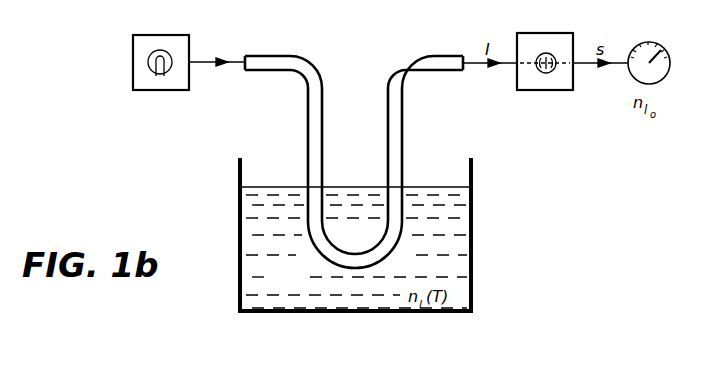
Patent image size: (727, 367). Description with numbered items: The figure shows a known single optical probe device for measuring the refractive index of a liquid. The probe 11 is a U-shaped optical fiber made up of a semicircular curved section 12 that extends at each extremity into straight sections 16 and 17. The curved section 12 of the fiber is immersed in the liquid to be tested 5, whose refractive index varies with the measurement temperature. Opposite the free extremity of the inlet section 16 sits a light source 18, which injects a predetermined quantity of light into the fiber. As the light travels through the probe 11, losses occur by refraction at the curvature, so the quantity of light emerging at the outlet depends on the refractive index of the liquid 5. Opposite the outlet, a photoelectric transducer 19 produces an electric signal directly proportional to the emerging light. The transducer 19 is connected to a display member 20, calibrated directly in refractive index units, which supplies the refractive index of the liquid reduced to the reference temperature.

The liquid to be tested 5 is at (430, 189).
The single probe 11 is at (477, 217).
The semicircular curved section 12 is at (327, 251).
The inlet section 16 is at (312, 114).
The right section 17 is at (398, 110).
The light source 18 is at (163, 88).
The photoelectric transducer 19 is at (552, 92).
The display member 20 is at (647, 41).